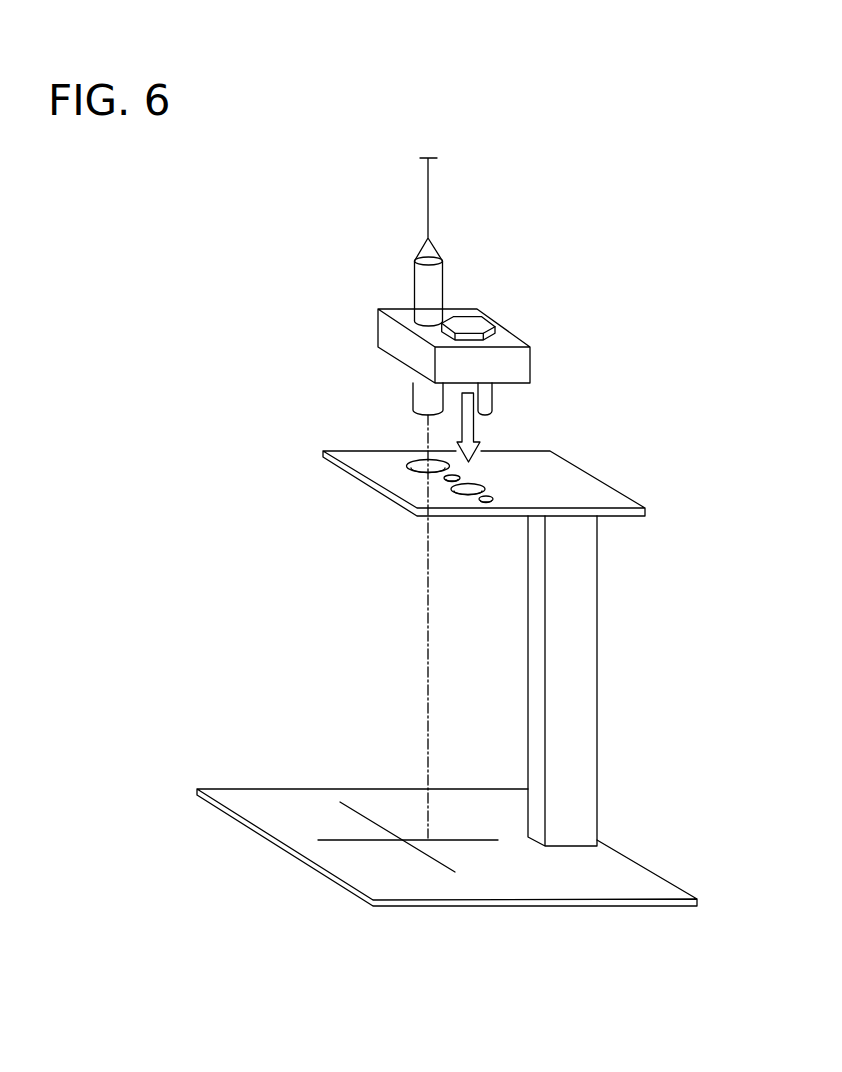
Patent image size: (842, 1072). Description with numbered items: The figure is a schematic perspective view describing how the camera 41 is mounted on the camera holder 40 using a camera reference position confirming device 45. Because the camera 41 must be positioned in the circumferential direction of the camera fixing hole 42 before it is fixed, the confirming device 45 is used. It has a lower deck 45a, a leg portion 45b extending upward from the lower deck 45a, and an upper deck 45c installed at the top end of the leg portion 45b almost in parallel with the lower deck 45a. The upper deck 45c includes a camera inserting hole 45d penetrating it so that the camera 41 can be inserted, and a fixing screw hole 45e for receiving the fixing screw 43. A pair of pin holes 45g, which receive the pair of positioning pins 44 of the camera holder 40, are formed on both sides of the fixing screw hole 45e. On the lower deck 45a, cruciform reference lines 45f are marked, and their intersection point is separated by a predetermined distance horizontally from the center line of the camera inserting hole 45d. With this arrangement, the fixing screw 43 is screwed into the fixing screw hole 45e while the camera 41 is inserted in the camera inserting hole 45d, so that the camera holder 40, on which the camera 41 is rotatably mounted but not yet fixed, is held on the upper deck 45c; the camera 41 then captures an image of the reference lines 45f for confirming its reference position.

The camera holder 40 is at (534, 352).
The camera 41 is at (445, 282).
The camera fixing hole 42 is at (413, 300).
The fixing screw 43 is at (480, 324).
The positioning pins 44 is at (453, 392).
The camera reference position confirming device 45 is at (663, 417).
The lower deck 45a is at (643, 860).
The leg portion 45b is at (597, 672).
The upper deck 45c is at (615, 483).
The camera inserting hole 45d is at (415, 460).
The fixing screw hole 45e is at (473, 495).
The reference lines 45f is at (467, 842).
The pin holes 45g is at (443, 478).